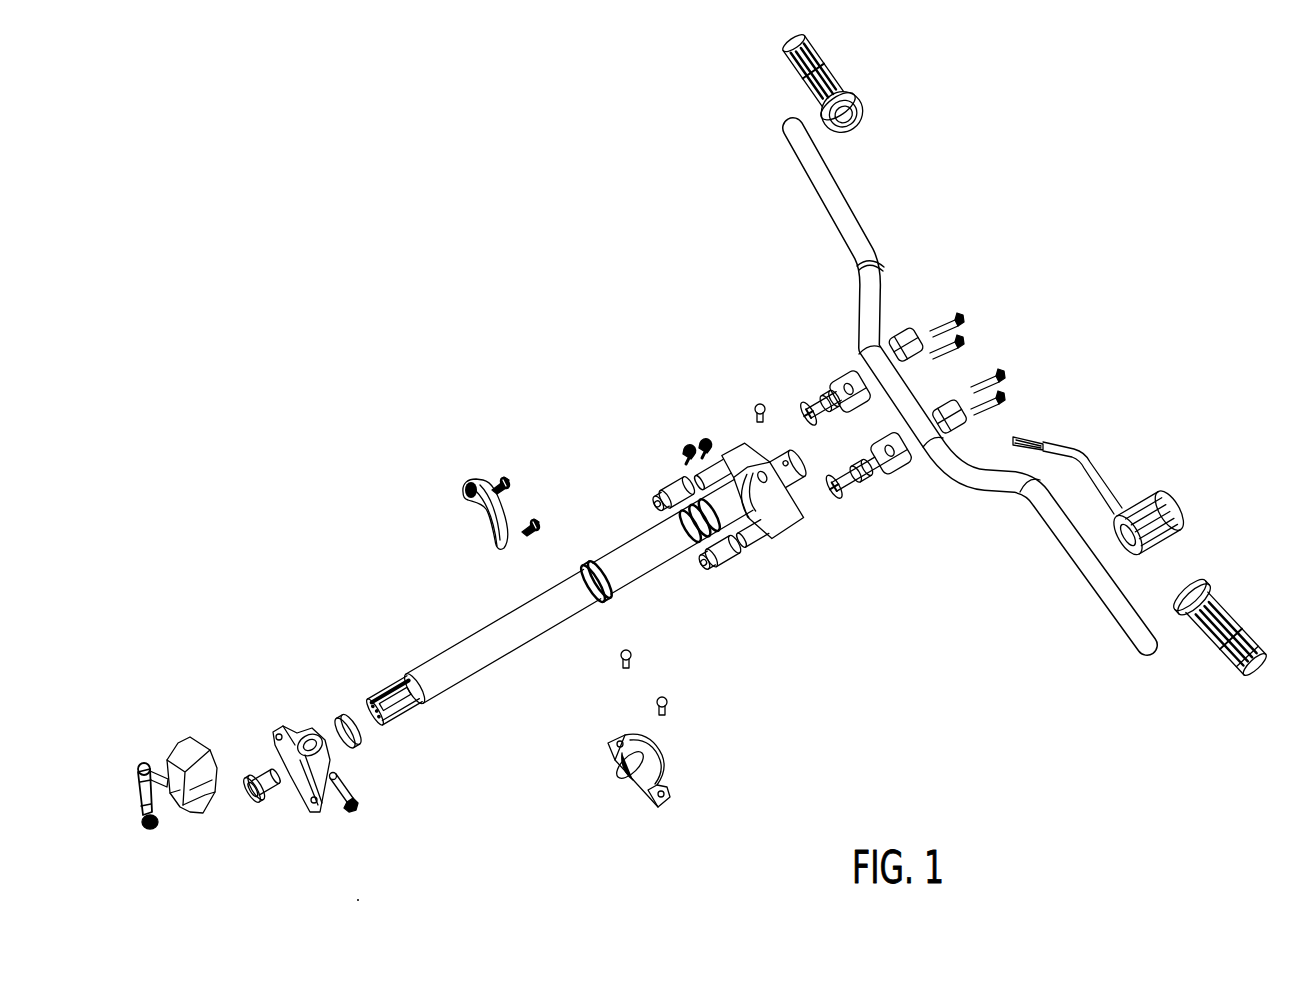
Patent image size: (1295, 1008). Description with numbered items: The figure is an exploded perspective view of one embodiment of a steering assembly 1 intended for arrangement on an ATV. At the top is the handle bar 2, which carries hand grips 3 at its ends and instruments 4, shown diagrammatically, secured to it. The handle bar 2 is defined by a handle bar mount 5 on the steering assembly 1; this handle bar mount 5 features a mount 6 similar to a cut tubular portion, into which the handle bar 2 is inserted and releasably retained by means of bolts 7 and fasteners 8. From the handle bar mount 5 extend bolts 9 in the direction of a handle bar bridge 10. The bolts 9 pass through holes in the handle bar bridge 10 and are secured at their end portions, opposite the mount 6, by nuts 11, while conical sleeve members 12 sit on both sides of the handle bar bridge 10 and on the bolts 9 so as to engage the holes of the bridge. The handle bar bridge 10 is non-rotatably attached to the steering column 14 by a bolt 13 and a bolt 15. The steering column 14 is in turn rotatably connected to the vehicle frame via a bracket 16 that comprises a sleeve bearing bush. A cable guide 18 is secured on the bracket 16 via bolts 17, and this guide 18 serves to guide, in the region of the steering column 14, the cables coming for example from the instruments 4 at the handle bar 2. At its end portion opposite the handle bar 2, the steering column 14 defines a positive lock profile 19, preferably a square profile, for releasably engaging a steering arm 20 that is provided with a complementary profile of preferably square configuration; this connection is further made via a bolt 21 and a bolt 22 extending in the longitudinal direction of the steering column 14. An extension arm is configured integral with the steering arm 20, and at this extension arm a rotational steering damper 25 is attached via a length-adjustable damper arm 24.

The steering assembly 1 is at (397, 323).
The handle bar 2 is at (1110, 604).
The hand grips 3 is at (829, 60).
The instruments 4 is at (1175, 493).
The handle bar mount 5 is at (905, 466).
The mount 6 is at (882, 422).
The bolts 7 is at (995, 382).
The fasteners 8 is at (908, 332).
The bolts 9 is at (848, 492).
The handle bar bridge 10 is at (790, 527).
The nuts 11 is at (660, 497).
The conical sleeve members 12 is at (675, 485).
The bolt 13 is at (755, 410).
The steering column 14 is at (465, 652).
The bolt 15 is at (698, 443).
The bracket 16 is at (615, 768).
The bolts 17 is at (504, 471).
The cable guide 18 is at (470, 480).
The positive lock profile 19 is at (395, 723).
The steering arm 20 is at (298, 736).
The bolt 21 is at (343, 804).
The bolt 22 is at (258, 808).
The damper arm 24 is at (133, 800).
The rotational steering damper 25 is at (178, 746).